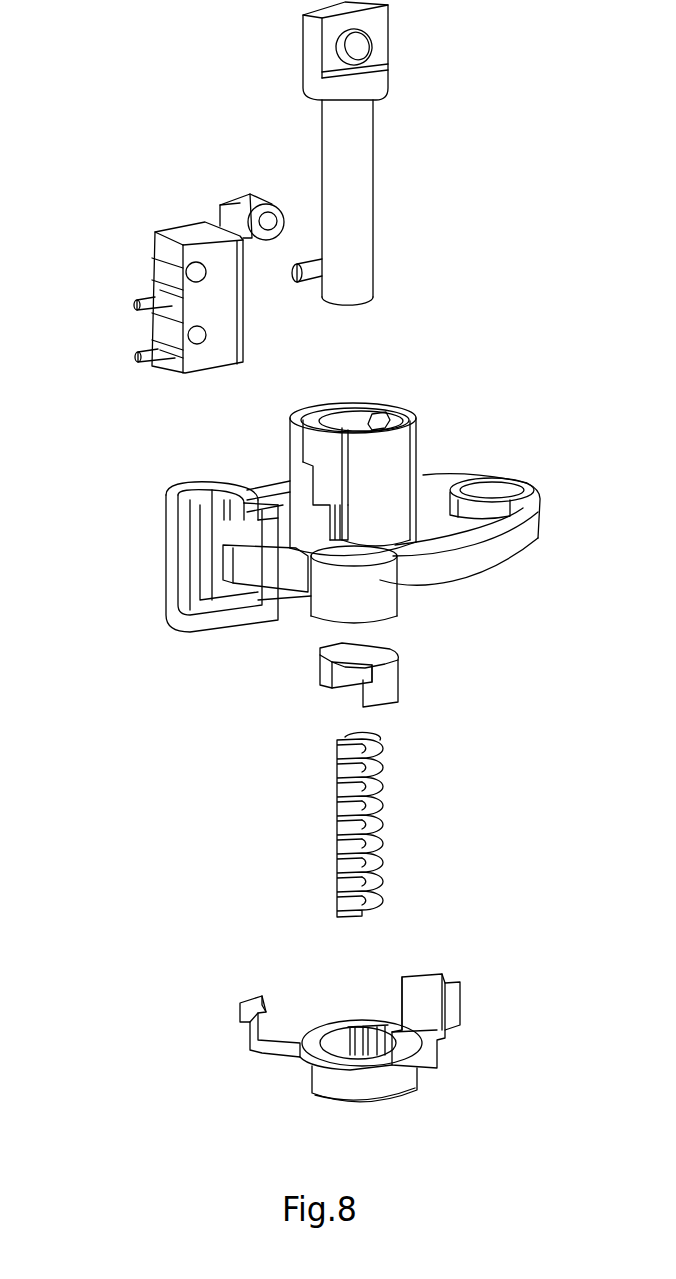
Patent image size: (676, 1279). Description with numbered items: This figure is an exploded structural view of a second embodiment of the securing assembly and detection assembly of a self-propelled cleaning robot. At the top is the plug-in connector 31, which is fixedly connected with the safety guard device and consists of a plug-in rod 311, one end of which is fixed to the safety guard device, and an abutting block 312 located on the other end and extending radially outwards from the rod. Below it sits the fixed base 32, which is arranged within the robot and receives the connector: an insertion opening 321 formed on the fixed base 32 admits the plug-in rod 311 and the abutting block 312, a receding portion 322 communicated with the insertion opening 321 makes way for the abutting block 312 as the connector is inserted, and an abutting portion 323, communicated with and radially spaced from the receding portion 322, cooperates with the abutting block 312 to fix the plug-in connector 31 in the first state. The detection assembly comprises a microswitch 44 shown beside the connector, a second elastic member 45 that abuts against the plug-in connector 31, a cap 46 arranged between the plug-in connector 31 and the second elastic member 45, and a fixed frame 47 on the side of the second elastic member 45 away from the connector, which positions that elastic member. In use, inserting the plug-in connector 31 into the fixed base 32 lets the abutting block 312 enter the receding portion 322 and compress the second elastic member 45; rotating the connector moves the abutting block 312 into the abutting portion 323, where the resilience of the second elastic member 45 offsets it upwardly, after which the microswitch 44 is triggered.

The plug-in connector 31 is at (333, 157).
The plug-in rod 311 is at (355, 195).
The abutting block 312 is at (317, 270).
The microswitch 44 is at (205, 263).
The fixed base 32 is at (383, 507).
The insertion opening 321 is at (378, 408).
The receding portion 322 is at (333, 522).
The abutting portion 323 is at (308, 466).
The cap 46 is at (387, 684).
The second elastic member 45 is at (378, 845).
The fixed frame 47 is at (429, 1002).